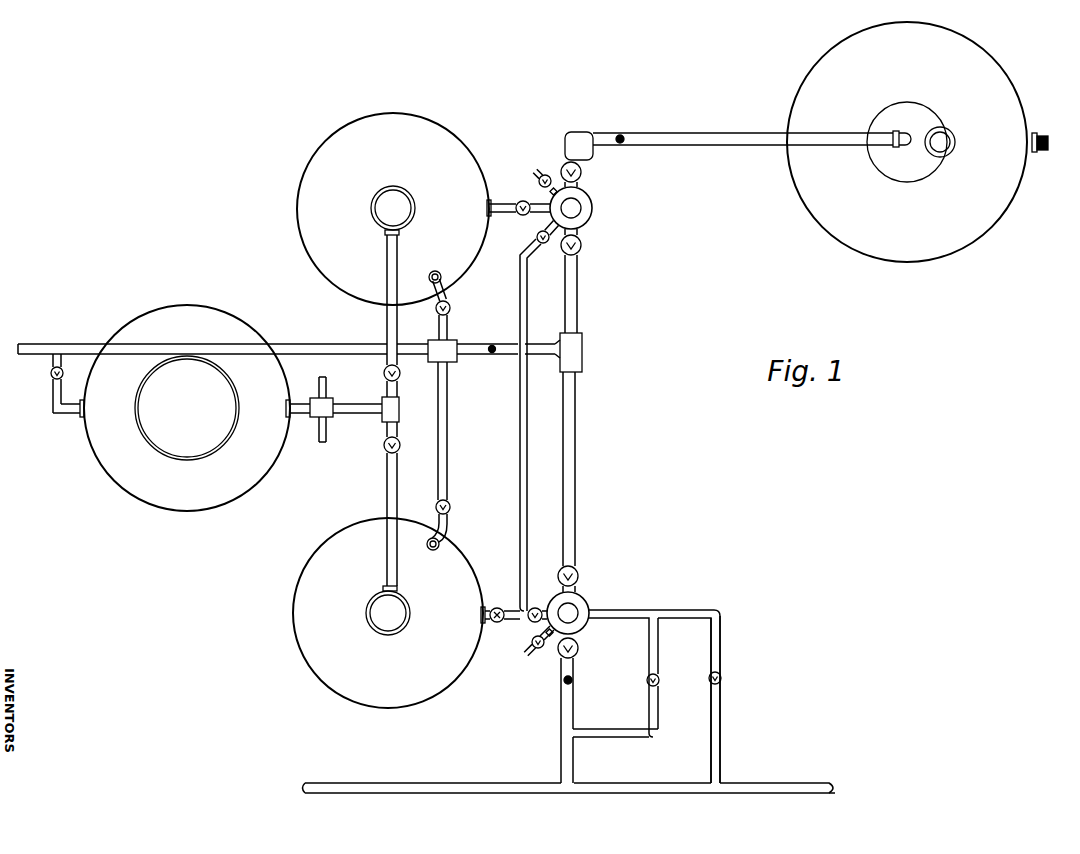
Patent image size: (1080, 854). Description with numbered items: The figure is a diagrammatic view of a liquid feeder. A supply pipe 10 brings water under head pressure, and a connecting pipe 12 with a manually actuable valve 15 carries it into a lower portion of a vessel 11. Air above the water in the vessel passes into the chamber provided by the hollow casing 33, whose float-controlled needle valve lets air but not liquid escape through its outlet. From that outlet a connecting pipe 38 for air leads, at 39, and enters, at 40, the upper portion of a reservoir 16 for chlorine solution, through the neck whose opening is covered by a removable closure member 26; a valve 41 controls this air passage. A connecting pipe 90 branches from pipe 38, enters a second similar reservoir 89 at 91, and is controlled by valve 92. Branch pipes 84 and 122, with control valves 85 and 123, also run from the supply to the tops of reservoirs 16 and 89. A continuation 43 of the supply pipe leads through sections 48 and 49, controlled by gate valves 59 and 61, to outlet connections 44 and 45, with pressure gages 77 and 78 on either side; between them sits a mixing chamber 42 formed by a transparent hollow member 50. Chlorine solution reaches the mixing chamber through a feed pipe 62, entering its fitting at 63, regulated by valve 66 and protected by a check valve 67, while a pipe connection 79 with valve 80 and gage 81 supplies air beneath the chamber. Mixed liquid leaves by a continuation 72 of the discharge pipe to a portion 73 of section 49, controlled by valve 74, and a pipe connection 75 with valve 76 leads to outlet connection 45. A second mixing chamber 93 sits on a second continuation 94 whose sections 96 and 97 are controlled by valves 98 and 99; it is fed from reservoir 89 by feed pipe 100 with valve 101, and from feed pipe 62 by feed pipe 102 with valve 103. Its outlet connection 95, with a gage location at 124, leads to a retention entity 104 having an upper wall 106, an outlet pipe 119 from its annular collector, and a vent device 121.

The supply pipe 10 is at (88, 344).
The vessel 11 is at (190, 308).
The connecting pipe 12 is at (58, 414).
The manually actuable valve 15 is at (50, 377).
The reservoir 16 is at (296, 620).
The removable closure member 26 is at (405, 610).
The hollow casing 33 is at (191, 462).
The connecting pipe for air 38 is at (342, 414).
The lead-off point of connecting pipe 39 is at (251, 404).
The entry point of connecting pipe 40 is at (397, 588).
The manually actuable valve 41 is at (384, 448).
The mixing chamber 42 is at (585, 605).
The continuation of the supply pipe 43 is at (577, 461).
The liquid outlet connection 44 is at (390, 783).
The liquid outlet connection 45 is at (775, 785).
The branch or section of the continuation 48 is at (576, 528).
The branch or section of the continuation 49 is at (574, 703).
The inverted, elongated hollow member 50 is at (586, 222).
The manually actuable valve 59 is at (579, 577).
The manually actuable valve 61 is at (578, 653).
The feed pipe 62 is at (522, 620).
The entry of feed pipe into hollow fitting 63 is at (536, 607).
The manually actuable valve 66 is at (532, 645).
The check valve 67 is at (497, 607).
The continuation of the discharge pipe 72 is at (630, 612).
The portion of the branch or section 49 73 is at (576, 740).
The manually actuable valve 74 is at (659, 682).
The pipe connection 75 is at (720, 646).
The manually actuable valve 76 is at (721, 679).
The pressure gage 77 is at (492, 353).
The pressure gage 78 is at (572, 680).
The pipe connection for air 79 is at (323, 392).
The manually actuable valve 80 is at (543, 175).
The pressure gage 81 is at (554, 186).
The branch pipe 84 is at (447, 462).
The manually actuable control valve 85 is at (450, 508).
The reservoir 89 is at (298, 213).
The connecting pipe for air 90 is at (386, 326).
The entry point of connecting pipe 91 is at (397, 235).
The manually actuable valve 92 is at (400, 375).
The mixing chamber 93 is at (581, 212).
The second continuation of the supply pipe 94 is at (578, 294).
The outlet connection 95 is at (703, 146).
The branch or section of the second continuation 96 is at (578, 272).
The branch or section of the second continuation 97 is at (580, 190).
The manually actuable valve 98 is at (581, 246).
The manually actuable valve 99 is at (582, 172).
The feed pipe 100 is at (509, 204).
The manually actuable valve 101 is at (521, 215).
The feed pipe 102 is at (519, 436).
The manually actuable valve 103 is at (537, 240).
The retention entity 104 is at (822, 226).
The upper wall 106 is at (979, 230).
The outlet pipe 119 is at (1040, 153).
The vent device 121 is at (948, 137).
The branch pipe 122 is at (449, 330).
The manually actuable valve 123 is at (450, 307).
The pressure gage location 124 is at (620, 135).